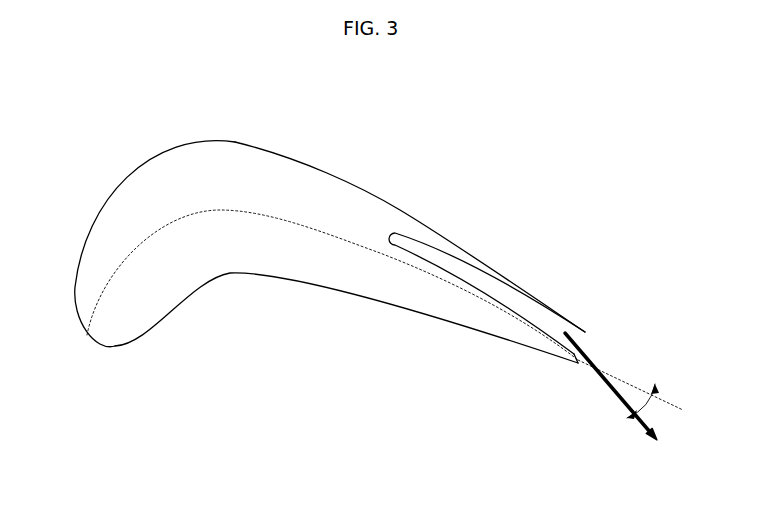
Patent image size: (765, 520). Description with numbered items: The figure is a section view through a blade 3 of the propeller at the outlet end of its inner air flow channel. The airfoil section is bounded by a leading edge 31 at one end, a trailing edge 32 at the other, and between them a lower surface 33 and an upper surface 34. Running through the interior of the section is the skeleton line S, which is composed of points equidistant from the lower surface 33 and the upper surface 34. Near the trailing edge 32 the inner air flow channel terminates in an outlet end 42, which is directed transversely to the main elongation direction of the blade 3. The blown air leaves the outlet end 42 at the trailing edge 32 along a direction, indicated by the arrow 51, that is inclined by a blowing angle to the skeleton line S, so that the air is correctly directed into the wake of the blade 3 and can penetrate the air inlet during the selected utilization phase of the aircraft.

The blade 3 is at (343, 273).
The leading edge 31 is at (83, 335).
The trailing edge 32 is at (578, 365).
The lower surface 33 is at (335, 293).
The upper surface 34 is at (320, 167).
The outlet end 42 is at (583, 349).
The cooling air ejection direction 51 is at (607, 388).
The skeleton line S is at (287, 225).